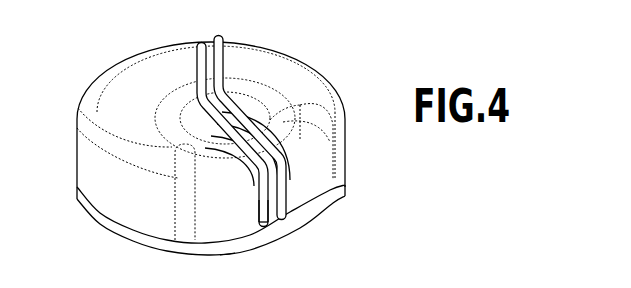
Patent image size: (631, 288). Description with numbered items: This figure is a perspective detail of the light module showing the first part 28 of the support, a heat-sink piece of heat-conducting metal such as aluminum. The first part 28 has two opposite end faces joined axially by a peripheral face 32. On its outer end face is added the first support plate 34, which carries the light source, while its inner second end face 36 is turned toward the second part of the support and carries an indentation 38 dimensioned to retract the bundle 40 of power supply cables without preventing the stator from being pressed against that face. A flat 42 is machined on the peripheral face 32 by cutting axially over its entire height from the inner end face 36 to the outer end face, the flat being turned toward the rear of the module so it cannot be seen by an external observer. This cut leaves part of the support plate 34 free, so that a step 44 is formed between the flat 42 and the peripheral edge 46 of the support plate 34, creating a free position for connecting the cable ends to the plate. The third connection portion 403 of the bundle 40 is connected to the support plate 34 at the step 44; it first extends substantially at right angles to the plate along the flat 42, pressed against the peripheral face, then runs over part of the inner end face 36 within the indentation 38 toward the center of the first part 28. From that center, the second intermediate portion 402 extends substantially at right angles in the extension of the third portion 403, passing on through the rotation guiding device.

The first part of the support 28 is at (320, 63).
The peripheral face 32 is at (105, 162).
The first support plate 34 is at (314, 226).
The inner second end face 36 is at (122, 82).
The indentation 38 is at (229, 102).
The bundle of power supply cables 40 is at (240, 130).
The flat 42 is at (315, 147).
The step 44 is at (250, 246).
The peripheral edge of the support plate 46 is at (341, 204).
The second intermediate portion 402 is at (197, 61).
The third connection portion 403 is at (260, 197).